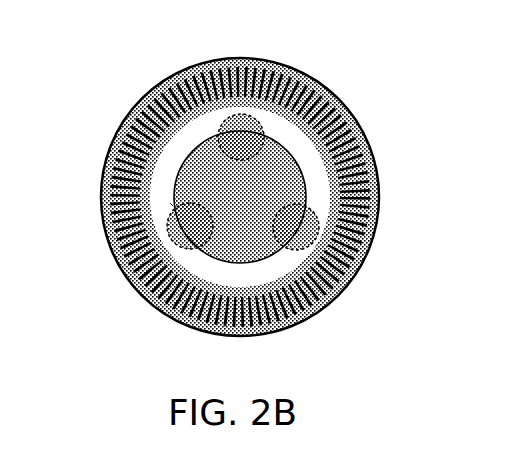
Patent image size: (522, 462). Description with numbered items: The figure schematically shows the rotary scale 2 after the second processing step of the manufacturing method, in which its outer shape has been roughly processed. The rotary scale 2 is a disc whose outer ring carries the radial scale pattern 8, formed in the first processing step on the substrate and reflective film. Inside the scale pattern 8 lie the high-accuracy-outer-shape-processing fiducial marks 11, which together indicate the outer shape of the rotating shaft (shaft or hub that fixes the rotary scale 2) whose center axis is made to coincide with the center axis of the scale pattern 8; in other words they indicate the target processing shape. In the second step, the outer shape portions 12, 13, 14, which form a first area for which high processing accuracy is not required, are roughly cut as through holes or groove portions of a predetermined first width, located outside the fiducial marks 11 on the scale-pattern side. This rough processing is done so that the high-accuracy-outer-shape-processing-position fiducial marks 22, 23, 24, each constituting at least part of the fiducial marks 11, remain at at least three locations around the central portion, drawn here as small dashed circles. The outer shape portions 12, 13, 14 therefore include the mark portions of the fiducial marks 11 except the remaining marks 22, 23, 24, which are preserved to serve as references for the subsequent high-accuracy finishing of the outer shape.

The rotary scale 2 is at (380, 150).
The radial scale pattern 8 is at (376, 237).
The high-accuracy-outer-shape-processing fiducial marks 11 is at (208, 252).
The outer shape portion 12 is at (308, 188).
The outer shape portion 13 is at (318, 318).
The outer shape portion 14 is at (170, 203).
The high-accuracy-outer-shape-processing-position fiducial mark 22 is at (258, 121).
The high-accuracy-outer-shape-processing-position fiducial mark 23 is at (366, 266).
The high-accuracy-outer-shape-processing-position fiducial mark 24 is at (168, 240).